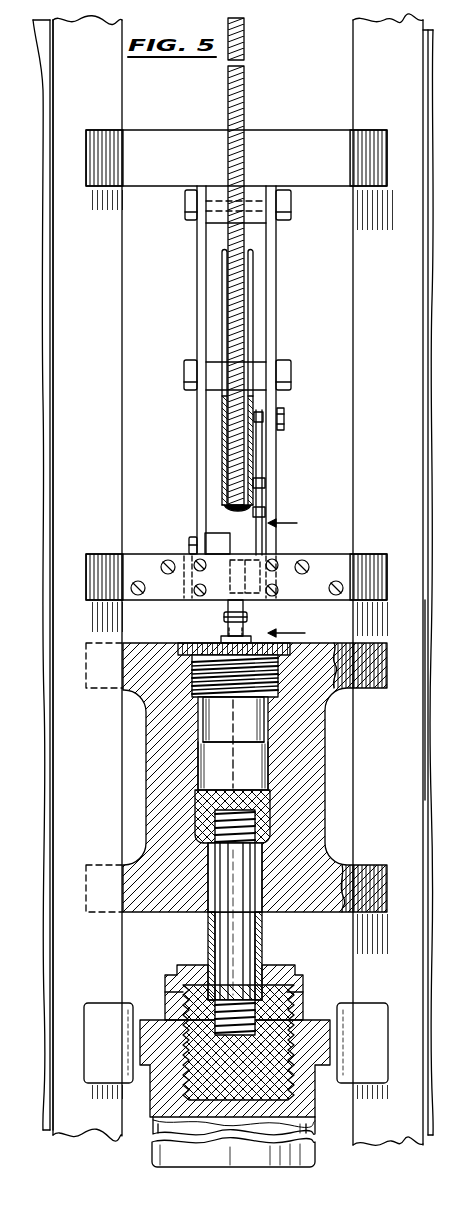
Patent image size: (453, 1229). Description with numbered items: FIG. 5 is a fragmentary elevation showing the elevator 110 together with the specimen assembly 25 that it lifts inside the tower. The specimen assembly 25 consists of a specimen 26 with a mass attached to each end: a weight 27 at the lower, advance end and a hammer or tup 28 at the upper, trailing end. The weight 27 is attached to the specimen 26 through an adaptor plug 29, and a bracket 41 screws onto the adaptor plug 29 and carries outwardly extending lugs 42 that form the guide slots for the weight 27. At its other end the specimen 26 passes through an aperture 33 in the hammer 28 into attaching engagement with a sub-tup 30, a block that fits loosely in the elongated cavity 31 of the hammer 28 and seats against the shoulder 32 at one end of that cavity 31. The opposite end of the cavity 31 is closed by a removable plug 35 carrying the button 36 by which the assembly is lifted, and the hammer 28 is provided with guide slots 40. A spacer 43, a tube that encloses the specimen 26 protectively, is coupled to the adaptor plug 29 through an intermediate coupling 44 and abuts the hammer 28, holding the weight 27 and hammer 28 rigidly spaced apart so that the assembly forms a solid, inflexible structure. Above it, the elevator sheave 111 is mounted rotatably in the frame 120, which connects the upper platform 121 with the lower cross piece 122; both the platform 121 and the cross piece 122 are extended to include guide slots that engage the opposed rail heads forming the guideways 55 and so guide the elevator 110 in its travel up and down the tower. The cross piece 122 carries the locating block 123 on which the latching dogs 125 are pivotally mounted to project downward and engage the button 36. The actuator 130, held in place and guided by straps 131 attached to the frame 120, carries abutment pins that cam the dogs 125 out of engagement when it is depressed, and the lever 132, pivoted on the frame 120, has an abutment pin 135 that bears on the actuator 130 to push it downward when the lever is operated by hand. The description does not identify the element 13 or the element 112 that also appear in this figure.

The outer casing 13 is at (439, 702).
The specimen assembly 25 is at (138, 840).
The specimen 26 is at (238, 946).
The weight 27 is at (307, 1091).
The hammer or tup 28 is at (316, 742).
The adaptor plug 29 is at (298, 990).
The sub-tup 30 is at (271, 801).
The elongated cavity 31 is at (256, 766).
The shoulder 32 is at (260, 848).
The aperture 33 is at (257, 882).
The plug 35 is at (270, 740).
The button 36 is at (224, 617).
The guide slots 40 is at (125, 691).
The bracket 41 is at (329, 1016).
The lugs 42 is at (106, 1005).
The spacer 43 is at (211, 925).
The intermediate coupling 44 is at (178, 992).
The heads of the rails (guideways) 55 is at (97, 476).
The elevator 110 is at (284, 286).
The elevator sheave 111 is at (255, 315).
The threaded rod 112 is at (247, 106).
The frame 120 is at (197, 259).
The upper platform 121 is at (186, 167).
The lower cross piece 122 is at (156, 541).
The locating block 123 is at (216, 545).
The latching dogs 125 is at (243, 633).
The actuator 130 is at (263, 453).
The straps 131 is at (266, 484).
The lever 132 is at (285, 418).
The abutment pin 135 is at (264, 413).